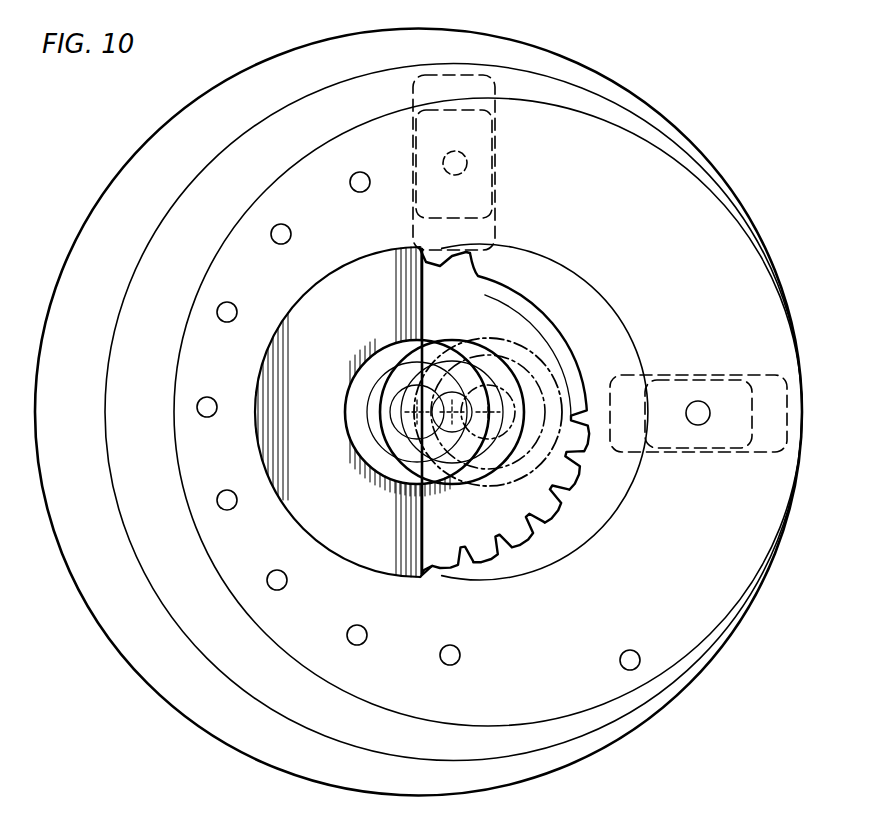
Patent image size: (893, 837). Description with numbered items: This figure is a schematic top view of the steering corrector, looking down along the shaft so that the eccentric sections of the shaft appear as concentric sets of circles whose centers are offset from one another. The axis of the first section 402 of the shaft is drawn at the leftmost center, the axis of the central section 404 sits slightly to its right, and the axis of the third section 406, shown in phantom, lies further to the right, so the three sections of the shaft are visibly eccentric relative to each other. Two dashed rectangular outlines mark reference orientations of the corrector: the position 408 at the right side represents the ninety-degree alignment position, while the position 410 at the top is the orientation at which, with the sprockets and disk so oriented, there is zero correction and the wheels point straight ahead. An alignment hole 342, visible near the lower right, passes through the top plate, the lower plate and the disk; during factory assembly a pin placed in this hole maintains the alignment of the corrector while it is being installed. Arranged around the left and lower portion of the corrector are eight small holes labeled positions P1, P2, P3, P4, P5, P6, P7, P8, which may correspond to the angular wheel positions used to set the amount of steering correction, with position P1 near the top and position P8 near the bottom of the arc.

The axis of the first section 402 is at (413, 406).
The axis of the central section 404 is at (453, 406).
The axis of the third section 406 is at (492, 410).
The 90° alignment position 408 is at (700, 425).
The zero correction position 410 is at (470, 77).
The alignment hole 342 is at (634, 652).
The position P1 is at (350, 180).
The position P2 is at (270, 233).
The position P3 is at (216, 313).
The position P4 is at (196, 407).
The position P5 is at (216, 502).
The position P6 is at (267, 579).
The position P7 is at (346, 628).
The position P8 is at (462, 663).